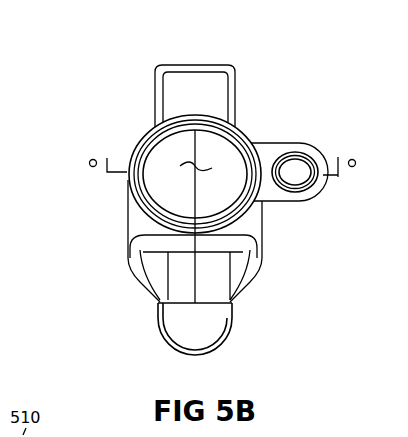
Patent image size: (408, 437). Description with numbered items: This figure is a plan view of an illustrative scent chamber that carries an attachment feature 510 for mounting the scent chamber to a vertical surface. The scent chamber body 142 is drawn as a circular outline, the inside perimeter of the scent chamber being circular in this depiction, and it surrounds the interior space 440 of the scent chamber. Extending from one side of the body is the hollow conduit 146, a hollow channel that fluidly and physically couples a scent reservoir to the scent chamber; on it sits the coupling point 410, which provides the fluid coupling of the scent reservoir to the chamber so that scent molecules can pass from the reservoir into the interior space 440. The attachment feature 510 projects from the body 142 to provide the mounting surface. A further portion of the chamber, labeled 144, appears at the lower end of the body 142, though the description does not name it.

The scent chamber body 142 is at (131, 150).
The base portion 144 is at (230, 338).
The hollow conduit 146 is at (315, 150).
The coupling point 410 is at (281, 160).
The interior space 440 is at (197, 160).
The attachment feature 510 is at (238, 92).